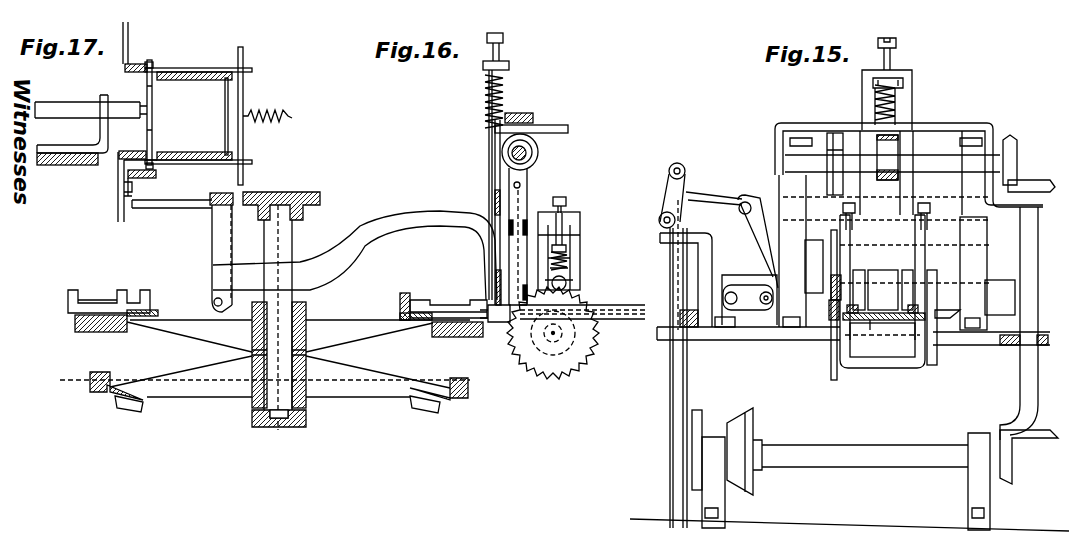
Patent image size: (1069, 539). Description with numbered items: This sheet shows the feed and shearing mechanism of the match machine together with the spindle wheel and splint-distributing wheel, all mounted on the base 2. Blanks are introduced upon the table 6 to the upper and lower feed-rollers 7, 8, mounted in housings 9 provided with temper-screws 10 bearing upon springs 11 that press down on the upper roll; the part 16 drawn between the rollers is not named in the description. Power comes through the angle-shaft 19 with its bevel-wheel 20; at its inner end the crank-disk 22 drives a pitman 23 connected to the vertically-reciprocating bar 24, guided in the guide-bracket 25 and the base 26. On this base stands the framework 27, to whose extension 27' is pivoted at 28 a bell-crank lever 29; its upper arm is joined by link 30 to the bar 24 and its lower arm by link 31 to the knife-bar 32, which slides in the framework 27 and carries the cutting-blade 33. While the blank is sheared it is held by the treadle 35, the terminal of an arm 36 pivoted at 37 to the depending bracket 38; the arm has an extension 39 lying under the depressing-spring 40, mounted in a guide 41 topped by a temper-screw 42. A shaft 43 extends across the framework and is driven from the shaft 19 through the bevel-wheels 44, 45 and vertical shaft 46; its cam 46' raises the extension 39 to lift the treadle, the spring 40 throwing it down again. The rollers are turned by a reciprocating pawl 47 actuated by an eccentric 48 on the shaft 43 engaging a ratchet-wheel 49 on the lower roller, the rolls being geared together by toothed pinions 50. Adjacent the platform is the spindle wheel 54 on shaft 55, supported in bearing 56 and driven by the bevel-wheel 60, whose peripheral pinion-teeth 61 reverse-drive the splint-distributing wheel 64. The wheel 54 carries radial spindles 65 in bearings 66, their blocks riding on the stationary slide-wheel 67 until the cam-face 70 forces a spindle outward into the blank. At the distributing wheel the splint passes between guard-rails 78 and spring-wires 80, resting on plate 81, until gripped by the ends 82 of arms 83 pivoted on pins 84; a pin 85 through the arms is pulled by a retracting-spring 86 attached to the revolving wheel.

In FIG. 15, the base 2 is at (849, 521).
In FIG. 15, the table 6 is at (868, 322).
In FIG. 15, the upper feed-roller 7 is at (883, 290).
In FIG. 15, the lower feed-roller 8 is at (884, 331).
In FIG. 16, the housings 9 is at (580, 244).
In FIG. 15, the housings 9 is at (850, 248).
In FIG. 16, the temper-screws 10 is at (567, 201).
In FIG. 15, the temper-screws 10 is at (855, 210).
In FIG. 16, the springs 11 is at (570, 261).
In FIG. 15, the side pieces 16 is at (905, 270).
In FIG. 15, the angle-shaft 19 is at (853, 457).
In FIG. 15, the bevel-wheel 20 is at (735, 420).
In FIG. 15, the crank-disk 22 is at (697, 417).
In FIG. 15, the pitman 23 is at (689, 365).
In FIG. 15, the reciprocating bar 24 is at (673, 280).
In FIG. 15, the guide-bracket 25 is at (667, 233).
In FIG. 15, the base 26 is at (657, 334).
In FIG. 16, the framework 27 is at (471, 212).
In FIG. 15, the framework 27 is at (885, 273).
In FIG. 15, the extension of framework 27' is at (727, 189).
In FIG. 15, the pivot 28 is at (743, 203).
In FIG. 15, the bell-crank lever 29 is at (755, 250).
In FIG. 15, the link 30 is at (665, 196).
In FIG. 15, the link 31 is at (750, 306).
In FIG. 16, the knife-bar 32 is at (497, 277).
In FIG. 15, the knife-bar 32 is at (738, 266).
In FIG. 15, the cutting-blade 33 is at (946, 320).
In FIG. 16, the treadle 35 is at (490, 290).
In FIG. 16, the arm 36 is at (372, 236).
In FIG. 16, the pivot 37 is at (213, 300).
In FIG. 16, the depending bracket 38 is at (210, 250).
In FIG. 16, the extension 39 is at (565, 128).
In FIG. 15, the extension 39 is at (868, 126).
In FIG. 16, the depressing-spring 40 is at (504, 100).
In FIG. 15, the depressing-spring 40 is at (898, 105).
In FIG. 16, the guide 41 is at (488, 90).
In FIG. 15, the guide 41 is at (862, 90).
In FIG. 16, the temper-screw 42 is at (503, 50).
In FIG. 15, the temper-screw 42 is at (898, 55).
In FIG. 16, the shaft 43 is at (528, 156).
In FIG. 15, the shaft 43 is at (929, 164).
In FIG. 15, the bevel-wheel 44 is at (1037, 183).
In FIG. 15, the bevel-wheel 45 is at (1012, 466).
In FIG. 15, the vertical shaft 46 is at (1030, 323).
In FIG. 15, the cam 46' is at (911, 157).
In FIG. 16, the reciprocating pawl 47 is at (519, 212).
In FIG. 15, the reciprocating pawl 47 is at (822, 277).
In FIG. 16, the eccentric 48 is at (540, 150).
In FIG. 15, the eccentric 48 is at (832, 135).
In FIG. 16, the ratchet-wheel 49 is at (562, 366).
In FIG. 15, the ratchet-wheel 49 is at (832, 381).
In FIG. 15, the toothed pinions 50 is at (933, 297).
In FIG. 17, the spindle wheel 54 is at (70, 166).
In FIG. 16, the spindle wheel 54 is at (75, 322).
In FIG. 16, the shaft 55 is at (289, 241).
In FIG. 16, the bearing 56 is at (307, 421).
In FIG. 16, the driven bevel-wheel 60 is at (132, 411).
In FIG. 16, the peripheral pinion-teeth 61 is at (468, 389).
In FIG. 17, the splint-distributing wheel 64 is at (206, 81).
In FIG. 17, the spindles 65 is at (58, 110).
In FIG. 16, the spindles 65 is at (425, 300).
In FIG. 17, the bearings 66 is at (105, 98).
In FIG. 16, the slide-wheel 67 is at (158, 313).
In FIG. 16, the vertical cam-face 70 is at (402, 295).
In FIG. 17, the guard-rails 78 is at (134, 73).
In FIG. 17, the spring-wires 80 is at (153, 142).
In FIG. 17, the plate 81 is at (157, 178).
In FIG. 17, the ends of arms 82 is at (153, 64).
In FIG. 17, the arms 83 is at (205, 67).
In FIG. 17, the pins 84 is at (232, 97).
In FIG. 17, the pin 85 is at (245, 143).
In FIG. 17, the retracting-spring 86 is at (290, 114).